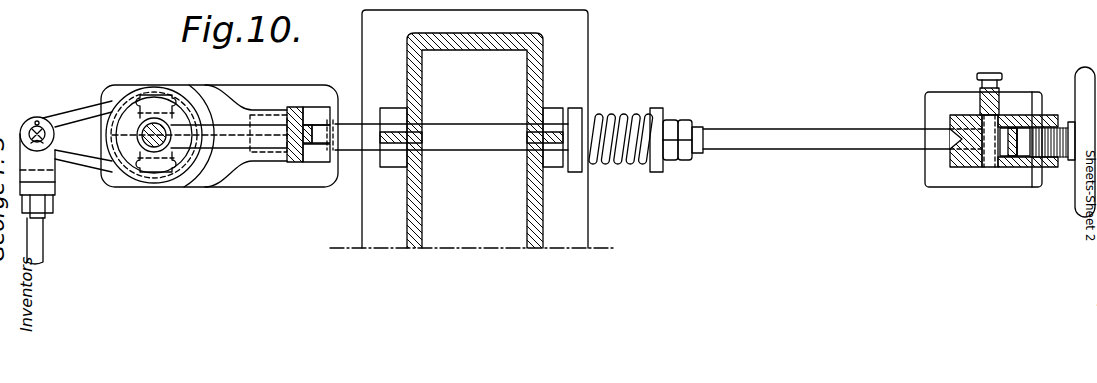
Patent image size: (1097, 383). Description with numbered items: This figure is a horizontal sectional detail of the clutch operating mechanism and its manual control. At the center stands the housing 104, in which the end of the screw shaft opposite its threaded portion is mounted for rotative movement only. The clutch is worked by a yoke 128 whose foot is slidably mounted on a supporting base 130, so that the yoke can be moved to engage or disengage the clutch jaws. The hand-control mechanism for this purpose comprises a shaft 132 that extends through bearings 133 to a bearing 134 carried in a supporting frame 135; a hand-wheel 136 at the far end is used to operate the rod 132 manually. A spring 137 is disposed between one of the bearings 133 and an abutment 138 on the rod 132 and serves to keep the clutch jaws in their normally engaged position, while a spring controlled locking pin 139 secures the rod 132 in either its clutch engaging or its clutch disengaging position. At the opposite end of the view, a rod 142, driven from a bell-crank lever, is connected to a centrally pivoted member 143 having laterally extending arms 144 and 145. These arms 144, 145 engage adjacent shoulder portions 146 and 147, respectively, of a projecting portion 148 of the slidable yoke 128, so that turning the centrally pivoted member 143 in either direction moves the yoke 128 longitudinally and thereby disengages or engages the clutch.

The housing 104 is at (470, 40).
The yoke 128 is at (292, 140).
The supporting base 130 is at (322, 190).
The shaft 132 is at (465, 135).
The bearings 133 is at (392, 162).
The bearing 134 is at (963, 167).
The supporting frame 135 is at (1048, 175).
The hand-wheel 136 is at (1082, 70).
The spring 137 is at (606, 118).
The abutment 138 is at (664, 122).
The spring controlled locking pin 139 is at (1000, 96).
The rod 142 is at (44, 234).
The centrally pivoted member 143 is at (137, 128).
The arm 144 is at (155, 98).
The arm 145 is at (160, 172).
The shoulder portion 146 is at (137, 100).
The shoulder portion 147 is at (140, 165).
The projecting portion 148 is at (122, 142).